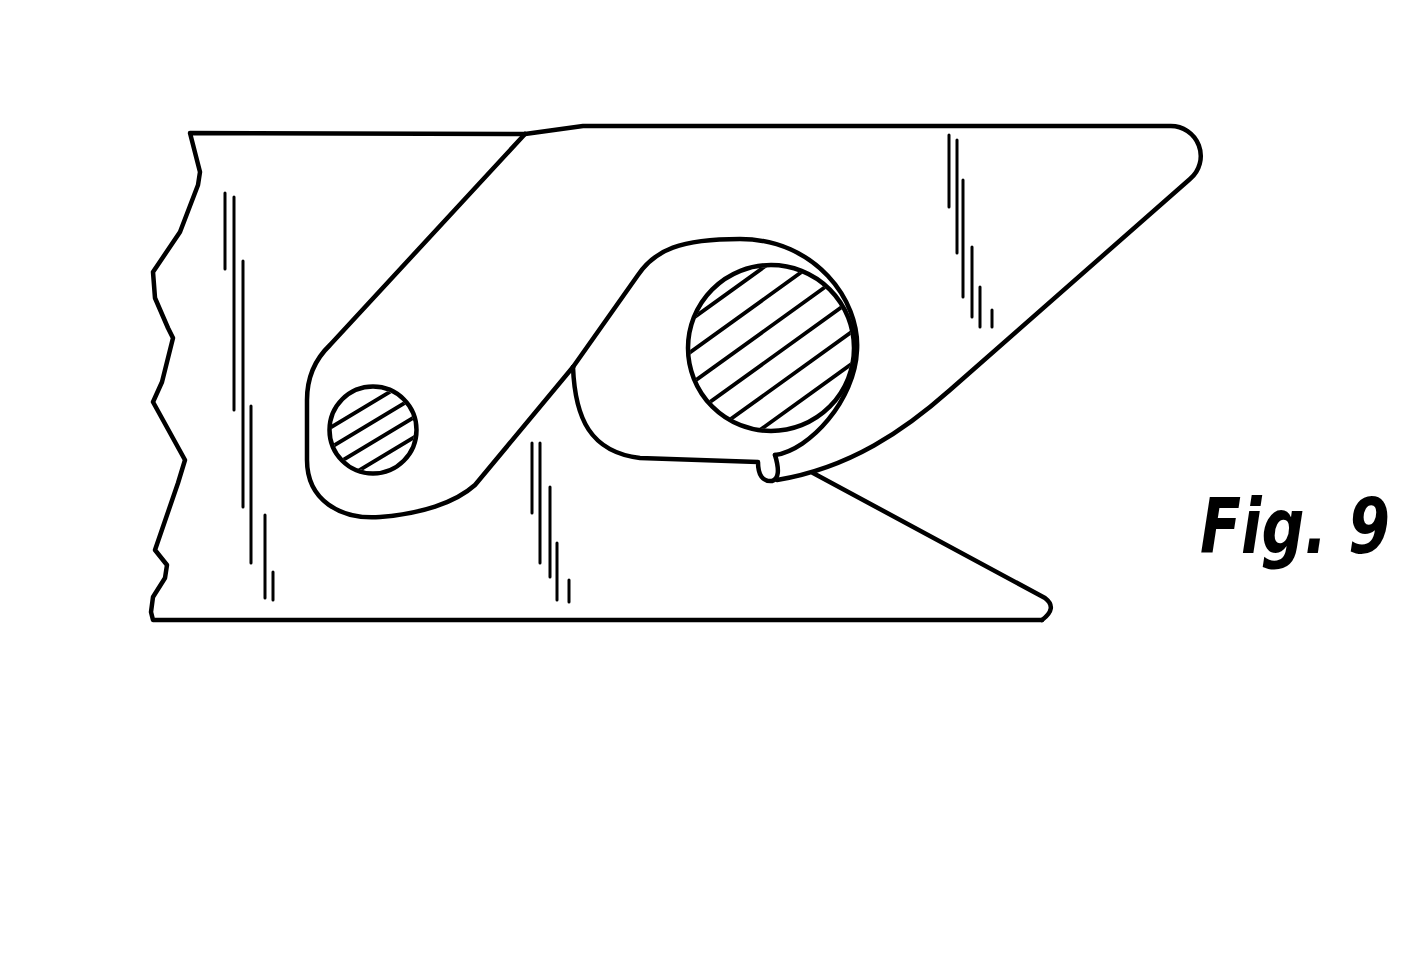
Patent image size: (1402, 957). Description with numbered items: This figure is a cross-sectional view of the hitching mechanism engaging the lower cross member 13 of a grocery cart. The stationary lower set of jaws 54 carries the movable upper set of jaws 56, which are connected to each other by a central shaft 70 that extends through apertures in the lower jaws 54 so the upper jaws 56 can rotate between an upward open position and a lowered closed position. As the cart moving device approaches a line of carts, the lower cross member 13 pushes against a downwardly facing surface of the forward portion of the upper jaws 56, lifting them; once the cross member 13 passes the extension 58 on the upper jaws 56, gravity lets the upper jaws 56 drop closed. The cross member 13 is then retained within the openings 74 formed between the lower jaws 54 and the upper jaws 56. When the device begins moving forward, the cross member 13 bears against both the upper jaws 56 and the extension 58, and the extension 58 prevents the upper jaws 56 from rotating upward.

The lower cross member 13 is at (820, 348).
The lower set of jaws 54 is at (308, 134).
The upper set of jaws 56 is at (628, 126).
The extension 58 is at (757, 472).
The central shaft 70 is at (386, 389).
The openings 74 is at (668, 300).